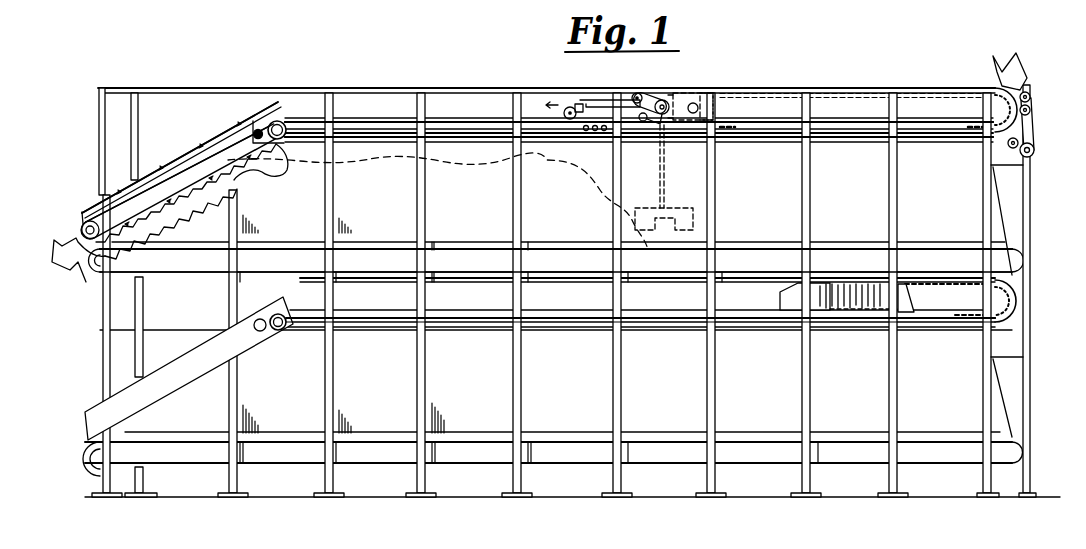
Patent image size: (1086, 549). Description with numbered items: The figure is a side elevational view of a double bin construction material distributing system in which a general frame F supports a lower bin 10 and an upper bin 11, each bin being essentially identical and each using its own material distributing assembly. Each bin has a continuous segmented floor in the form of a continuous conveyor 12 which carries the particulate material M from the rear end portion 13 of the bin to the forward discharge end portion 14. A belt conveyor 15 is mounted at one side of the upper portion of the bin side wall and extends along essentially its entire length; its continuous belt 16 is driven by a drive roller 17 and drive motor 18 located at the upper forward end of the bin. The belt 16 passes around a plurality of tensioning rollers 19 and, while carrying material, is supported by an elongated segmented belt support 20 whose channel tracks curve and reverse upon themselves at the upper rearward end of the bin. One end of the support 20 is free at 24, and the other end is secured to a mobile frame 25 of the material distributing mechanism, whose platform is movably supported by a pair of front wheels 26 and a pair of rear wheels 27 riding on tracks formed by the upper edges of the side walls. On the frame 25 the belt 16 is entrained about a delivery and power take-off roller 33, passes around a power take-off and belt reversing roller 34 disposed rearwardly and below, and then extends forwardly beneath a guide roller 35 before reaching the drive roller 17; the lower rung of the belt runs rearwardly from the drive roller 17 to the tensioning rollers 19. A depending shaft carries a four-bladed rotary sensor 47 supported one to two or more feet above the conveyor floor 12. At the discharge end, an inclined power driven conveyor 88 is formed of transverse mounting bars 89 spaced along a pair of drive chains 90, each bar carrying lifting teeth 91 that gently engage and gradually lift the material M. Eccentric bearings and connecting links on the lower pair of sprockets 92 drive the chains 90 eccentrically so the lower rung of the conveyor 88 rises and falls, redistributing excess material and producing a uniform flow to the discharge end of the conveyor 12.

The lower bin 10 is at (745, 397).
The upper bin 11 is at (745, 199).
The continuous conveyor 12 is at (98, 285).
The rear end portion 13 is at (996, 88).
The forward discharge end portion 14 is at (103, 192).
The belt conveyor 15 is at (864, 86).
The continuous belt 16 is at (1031, 127).
The drive roller 17 is at (280, 122).
The drive motor 18 is at (267, 120).
The tensioning rollers 19 is at (1031, 110).
The segmented belt support 20 is at (1026, 86).
The free end of belt support 24 is at (590, 132).
The mobile frame 25 is at (703, 92).
The front wheels 26 is at (570, 107).
The rear wheels 27 is at (730, 88).
The delivery and power take-off roller 33 is at (637, 93).
The power take-off and belt reversing roller 34 is at (663, 100).
The guide roller 35 is at (645, 121).
The four-bladed rotary sensor 47 is at (678, 207).
The power driven conveyor 88 is at (218, 140).
The transverse mounting bars 89 is at (213, 176).
The drive chains 90 is at (233, 180).
The lifting teeth 91 is at (213, 162).
The lower sprockets 92 is at (100, 262).
The particulate material M is at (445, 219).
The general frame F is at (990, 476).